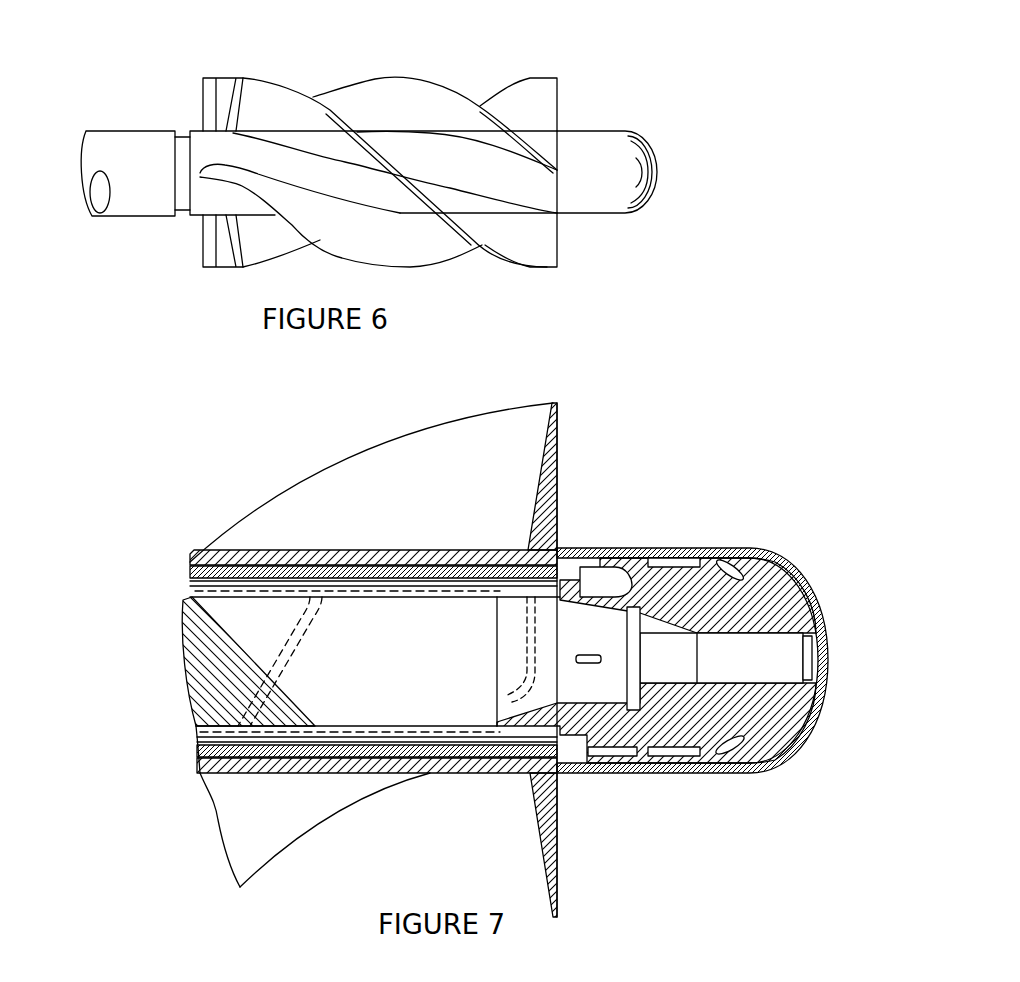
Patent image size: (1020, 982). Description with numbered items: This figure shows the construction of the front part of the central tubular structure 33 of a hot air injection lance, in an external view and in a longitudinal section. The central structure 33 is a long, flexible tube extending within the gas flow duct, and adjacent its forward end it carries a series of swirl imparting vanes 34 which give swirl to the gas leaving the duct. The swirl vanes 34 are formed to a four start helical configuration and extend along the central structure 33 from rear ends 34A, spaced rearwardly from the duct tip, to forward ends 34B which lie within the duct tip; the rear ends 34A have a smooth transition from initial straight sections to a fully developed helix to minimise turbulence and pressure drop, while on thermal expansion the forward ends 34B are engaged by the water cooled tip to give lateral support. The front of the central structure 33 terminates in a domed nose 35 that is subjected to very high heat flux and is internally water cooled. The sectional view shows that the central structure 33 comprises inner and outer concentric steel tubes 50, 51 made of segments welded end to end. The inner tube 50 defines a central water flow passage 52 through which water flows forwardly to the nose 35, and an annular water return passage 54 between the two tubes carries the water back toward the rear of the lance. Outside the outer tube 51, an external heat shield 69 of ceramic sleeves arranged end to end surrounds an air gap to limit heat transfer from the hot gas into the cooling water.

In FIG. 6, the central tubular structure 33 is at (95, 252).
In FIG. 7, the central tubular structure 33 is at (183, 838).
In FIG. 6, the swirl imparting vanes 34 is at (521, 107).
In FIG. 7, the swirl imparting vanes 34 is at (508, 447).
In FIG. 6, the rear ends of the vanes 34A is at (208, 118).
In FIG. 6, the forward ends of the vanes 34B is at (560, 106).
In FIG. 7, the domed nose 35 is at (800, 520).
In FIG. 7, the inner tube 50 is at (193, 590).
In FIG. 7, the outer tube 51 is at (188, 573).
In FIG. 7, the central water flow passage 52 is at (200, 676).
In FIG. 7, the annular water return passage 54 is at (303, 567).
In FIG. 7, the external heat shield 69 is at (335, 757).